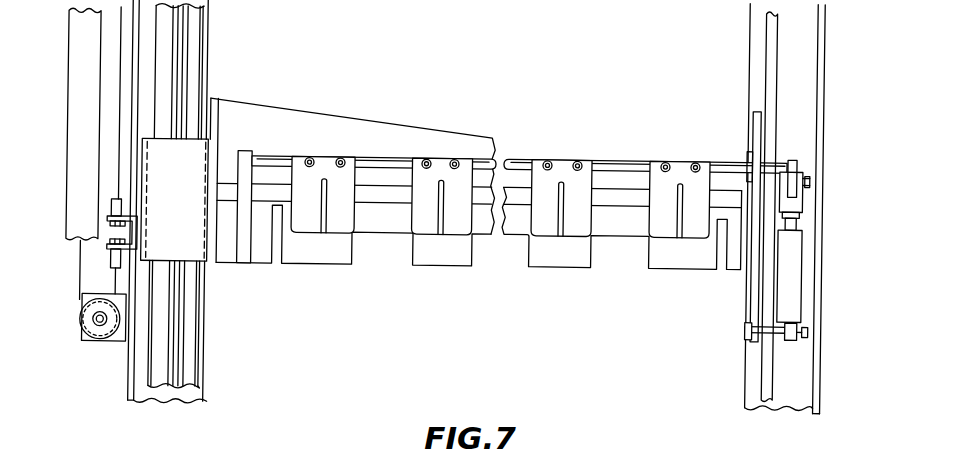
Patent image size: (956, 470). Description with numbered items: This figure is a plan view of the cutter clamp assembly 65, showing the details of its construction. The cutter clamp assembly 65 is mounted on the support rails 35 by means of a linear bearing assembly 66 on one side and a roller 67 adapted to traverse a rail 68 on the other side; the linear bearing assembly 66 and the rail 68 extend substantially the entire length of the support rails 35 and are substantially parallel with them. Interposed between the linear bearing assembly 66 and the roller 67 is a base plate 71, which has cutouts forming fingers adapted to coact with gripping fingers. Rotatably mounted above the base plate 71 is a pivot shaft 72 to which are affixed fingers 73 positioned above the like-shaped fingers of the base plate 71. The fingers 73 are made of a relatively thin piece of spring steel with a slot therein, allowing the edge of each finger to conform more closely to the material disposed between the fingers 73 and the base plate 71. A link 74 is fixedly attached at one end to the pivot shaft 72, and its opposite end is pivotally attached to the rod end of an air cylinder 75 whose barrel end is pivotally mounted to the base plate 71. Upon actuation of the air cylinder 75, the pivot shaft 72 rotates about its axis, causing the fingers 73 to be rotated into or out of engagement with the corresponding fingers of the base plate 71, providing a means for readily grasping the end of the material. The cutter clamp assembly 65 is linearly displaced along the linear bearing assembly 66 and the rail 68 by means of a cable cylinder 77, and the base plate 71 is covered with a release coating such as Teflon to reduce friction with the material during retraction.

The support rails 35 is at (195, 402).
The cutter clamp assembly 65 is at (421, 120).
The linear bearing assembly 66 is at (179, 339).
The roller 67 is at (769, 174).
The rail 68 is at (770, 76).
The base plate 71 is at (561, 264).
The pivot shaft 72 is at (266, 163).
The fingers 73 is at (344, 224).
The link 74 is at (794, 167).
The air cylinder 75 is at (784, 283).
The cable cylinder 77 is at (82, 246).